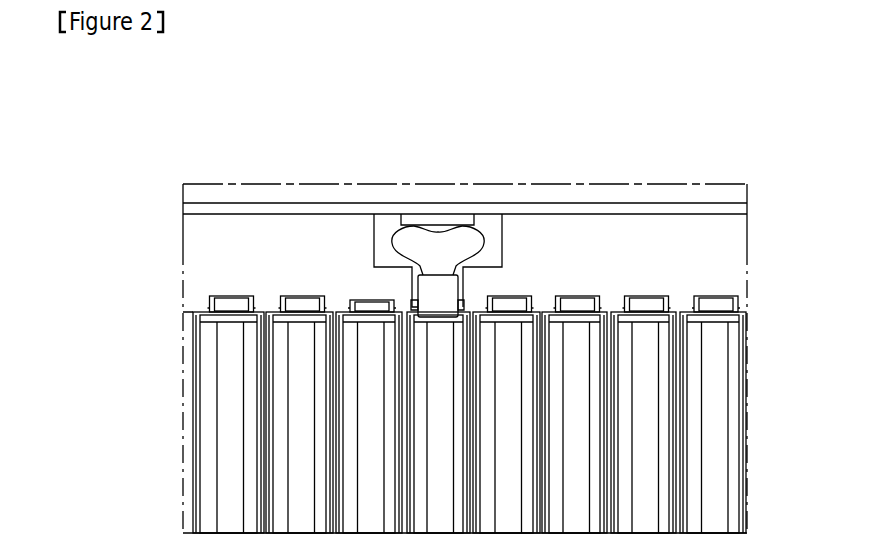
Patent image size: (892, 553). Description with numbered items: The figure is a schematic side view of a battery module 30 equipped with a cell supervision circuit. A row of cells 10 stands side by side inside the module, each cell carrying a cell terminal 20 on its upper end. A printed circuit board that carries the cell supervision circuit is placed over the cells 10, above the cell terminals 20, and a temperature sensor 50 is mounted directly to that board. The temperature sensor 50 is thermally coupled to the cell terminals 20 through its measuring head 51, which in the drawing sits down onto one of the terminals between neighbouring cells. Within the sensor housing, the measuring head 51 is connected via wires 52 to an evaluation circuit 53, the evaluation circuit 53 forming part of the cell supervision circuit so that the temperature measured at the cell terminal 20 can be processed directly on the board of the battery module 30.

The cells 10 is at (232, 396).
The cell terminals 20 is at (575, 300).
The battery module 30 is at (749, 420).
The temperature sensor 50 is at (493, 258).
The measuring head 51 is at (437, 288).
The wires 52 is at (393, 238).
The evaluation circuit 53 is at (414, 222).